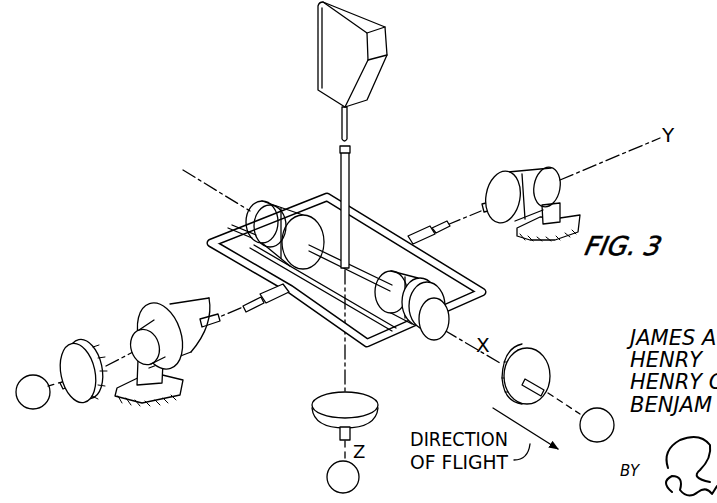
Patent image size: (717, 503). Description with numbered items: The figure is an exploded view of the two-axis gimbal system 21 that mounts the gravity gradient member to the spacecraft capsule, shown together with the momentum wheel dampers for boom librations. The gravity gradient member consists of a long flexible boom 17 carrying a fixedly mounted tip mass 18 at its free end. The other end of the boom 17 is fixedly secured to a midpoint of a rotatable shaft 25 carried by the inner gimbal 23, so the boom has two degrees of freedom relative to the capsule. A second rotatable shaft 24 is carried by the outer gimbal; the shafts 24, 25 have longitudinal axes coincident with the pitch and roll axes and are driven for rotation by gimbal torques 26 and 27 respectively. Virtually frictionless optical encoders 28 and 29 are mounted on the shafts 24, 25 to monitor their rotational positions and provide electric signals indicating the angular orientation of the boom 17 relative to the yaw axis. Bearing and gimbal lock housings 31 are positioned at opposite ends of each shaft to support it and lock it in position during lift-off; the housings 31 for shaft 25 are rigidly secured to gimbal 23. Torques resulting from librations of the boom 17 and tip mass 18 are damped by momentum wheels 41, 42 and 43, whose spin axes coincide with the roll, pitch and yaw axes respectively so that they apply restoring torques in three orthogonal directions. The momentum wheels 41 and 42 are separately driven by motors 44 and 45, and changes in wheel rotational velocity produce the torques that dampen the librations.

The flexible boom 17 is at (340, 158).
The tip mass 18 is at (350, 60).
The 2-axis gimbal system 21 is at (240, 139).
The inner gimbal 23 is at (229, 234).
The rotatable shaft 24 is at (258, 298).
The rotatable shaft 25 is at (347, 287).
The gimbal torque 26 is at (510, 172).
The gimbal torque 27 is at (295, 213).
The optical encoder 28 is at (170, 303).
The optical encoder 29 is at (393, 286).
The bearing and gimbal lock housings 31 is at (268, 204).
The momentum wheel 41 is at (546, 365).
The momentum wheel 42 is at (66, 362).
The momentum wheel 43 is at (324, 412).
The motor 44 is at (599, 408).
The motor 45 is at (35, 410).